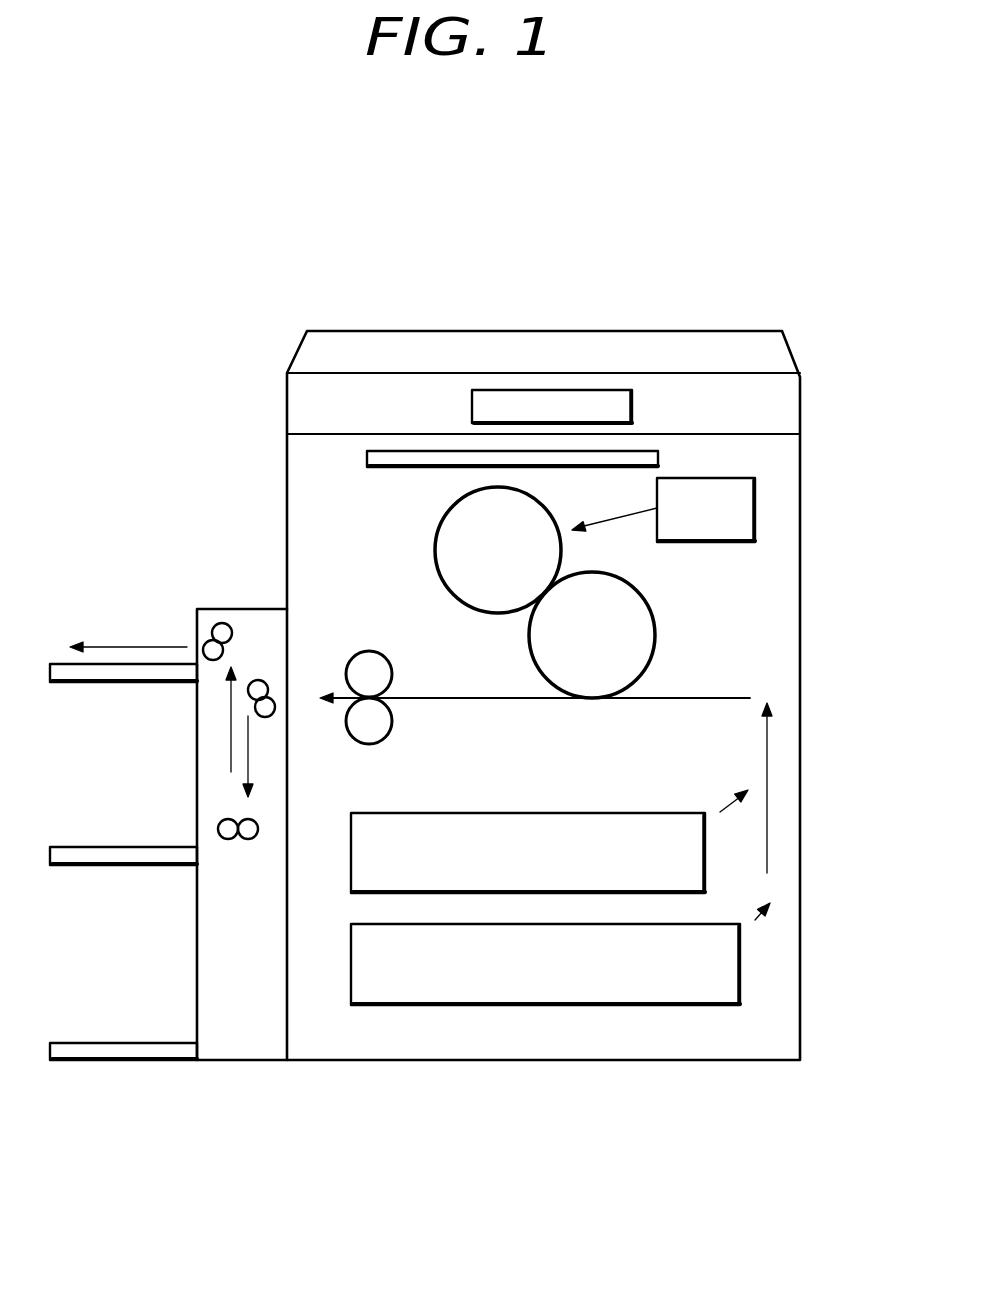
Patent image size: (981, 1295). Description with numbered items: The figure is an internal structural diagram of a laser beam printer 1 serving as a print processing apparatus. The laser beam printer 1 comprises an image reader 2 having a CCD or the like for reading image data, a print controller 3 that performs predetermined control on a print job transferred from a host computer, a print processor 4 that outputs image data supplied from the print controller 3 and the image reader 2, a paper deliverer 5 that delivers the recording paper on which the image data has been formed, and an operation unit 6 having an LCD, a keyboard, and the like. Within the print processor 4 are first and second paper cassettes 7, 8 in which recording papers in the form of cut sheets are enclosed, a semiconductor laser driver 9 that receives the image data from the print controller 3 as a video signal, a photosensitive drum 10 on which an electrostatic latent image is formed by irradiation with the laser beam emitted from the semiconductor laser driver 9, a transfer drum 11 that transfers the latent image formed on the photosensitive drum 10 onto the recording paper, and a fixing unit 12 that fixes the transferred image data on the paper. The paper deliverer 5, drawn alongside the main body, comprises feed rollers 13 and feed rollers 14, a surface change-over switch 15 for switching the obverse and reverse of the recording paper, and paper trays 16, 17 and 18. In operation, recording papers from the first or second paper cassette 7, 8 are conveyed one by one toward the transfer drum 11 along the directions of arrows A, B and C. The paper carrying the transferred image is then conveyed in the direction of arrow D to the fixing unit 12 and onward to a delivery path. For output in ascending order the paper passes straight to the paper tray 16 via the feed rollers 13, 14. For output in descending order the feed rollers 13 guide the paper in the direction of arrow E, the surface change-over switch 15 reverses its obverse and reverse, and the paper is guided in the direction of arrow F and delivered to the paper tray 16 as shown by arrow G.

The laser beam printer 1 is at (574, 300).
The image reader 2 is at (722, 331).
The print controller 3 is at (660, 459).
The print processor 4 is at (706, 627).
The paper deliverer 5 is at (195, 905).
The operation unit 6 is at (632, 402).
The first paper cassette 7 is at (468, 1007).
The second paper cassette 8 is at (577, 812).
The semiconductor laser driver 9 is at (755, 508).
The photosensitive drum 10 is at (440, 522).
The transfer drum 11 is at (641, 590).
The fixing unit 12 is at (380, 651).
The feed rollers 13 is at (259, 681).
The feed rollers 14 is at (229, 623).
The surface change-over switch 15 is at (232, 840).
The paper tray 16 is at (96, 684).
The paper tray 17 is at (100, 847).
The paper tray 18 is at (98, 1043).
The arrow A is at (717, 805).
The arrow B is at (755, 920).
The arrow C is at (768, 811).
The arrow D is at (728, 698).
The arrow E is at (255, 750).
The arrow F is at (230, 727).
The arrow G is at (112, 645).